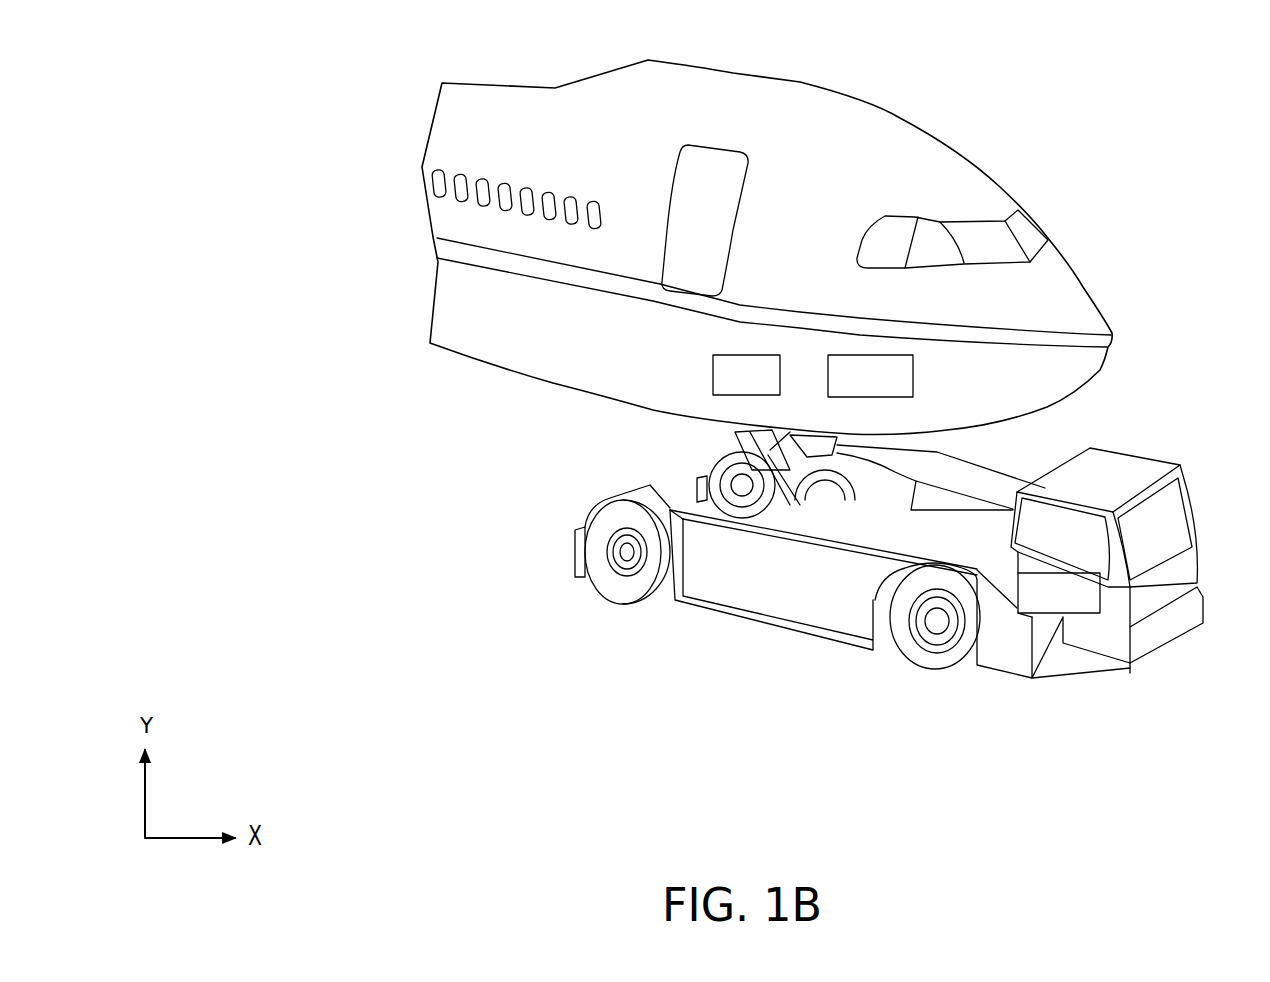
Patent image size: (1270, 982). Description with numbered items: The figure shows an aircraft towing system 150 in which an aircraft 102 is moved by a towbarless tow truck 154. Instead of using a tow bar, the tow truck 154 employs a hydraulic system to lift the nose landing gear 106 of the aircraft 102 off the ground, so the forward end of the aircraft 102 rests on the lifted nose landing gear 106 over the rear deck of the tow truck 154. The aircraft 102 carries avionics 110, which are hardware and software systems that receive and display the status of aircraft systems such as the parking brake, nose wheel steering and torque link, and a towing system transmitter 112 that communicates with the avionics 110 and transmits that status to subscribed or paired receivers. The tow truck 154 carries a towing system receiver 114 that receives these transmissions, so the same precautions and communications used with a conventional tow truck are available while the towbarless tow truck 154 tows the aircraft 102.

The aircraft 102 is at (553, 88).
The nose landing gear 106 is at (755, 457).
The avionics 110 is at (765, 388).
The towing system transmitter 112 is at (880, 388).
The towing system receiver 114 is at (1072, 605).
The aircraft towing system 150 is at (393, 108).
The tow truck 154 is at (1170, 582).